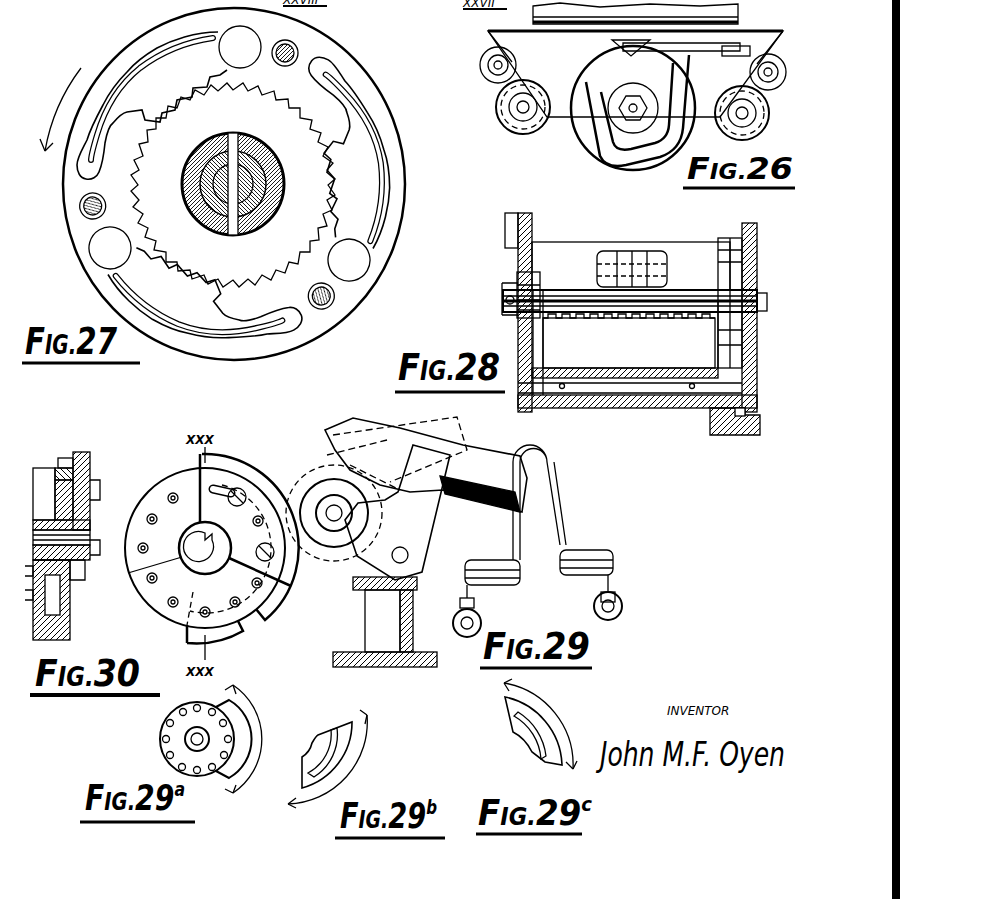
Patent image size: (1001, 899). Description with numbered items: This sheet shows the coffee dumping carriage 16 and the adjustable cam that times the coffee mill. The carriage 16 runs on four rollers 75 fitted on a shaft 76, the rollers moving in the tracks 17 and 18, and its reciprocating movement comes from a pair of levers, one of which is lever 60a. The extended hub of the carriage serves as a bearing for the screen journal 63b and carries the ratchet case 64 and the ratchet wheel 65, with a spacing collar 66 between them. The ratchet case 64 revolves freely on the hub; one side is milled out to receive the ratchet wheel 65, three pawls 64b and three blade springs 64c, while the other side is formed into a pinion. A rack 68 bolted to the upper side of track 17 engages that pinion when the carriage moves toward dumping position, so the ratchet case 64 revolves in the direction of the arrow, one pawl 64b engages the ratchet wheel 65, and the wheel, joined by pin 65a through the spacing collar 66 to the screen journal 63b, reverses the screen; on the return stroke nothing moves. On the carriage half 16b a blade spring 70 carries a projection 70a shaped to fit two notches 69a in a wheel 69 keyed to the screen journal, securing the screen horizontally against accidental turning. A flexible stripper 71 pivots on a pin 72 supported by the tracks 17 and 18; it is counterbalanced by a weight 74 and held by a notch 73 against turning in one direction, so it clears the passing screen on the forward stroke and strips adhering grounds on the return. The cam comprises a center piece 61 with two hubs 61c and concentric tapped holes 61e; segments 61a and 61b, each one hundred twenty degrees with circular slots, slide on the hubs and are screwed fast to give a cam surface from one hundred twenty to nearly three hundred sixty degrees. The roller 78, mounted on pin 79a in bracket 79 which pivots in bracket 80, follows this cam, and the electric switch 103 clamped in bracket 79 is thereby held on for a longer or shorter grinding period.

In FIG. 28, the coffee dumping carriage 16 is at (607, 253).
In FIG. 26, the carriage half 16b is at (488, 31).
In FIG. 28, the track 17 is at (518, 258).
In FIG. 28, the track 18 is at (757, 228).
In FIG. 26, the lever 60a is at (647, 123).
In FIG. 29, the center piece 61 is at (166, 505).
In FIG. 29A, the center piece 61 is at (162, 724).
In FIG. 30, the center piece 61 is at (63, 458).
In FIG. 29, the segment 61a is at (198, 461).
In FIG. 29C, the segment 61a is at (510, 712).
In FIG. 30, the segment 61a is at (82, 452).
In FIG. 29, the segment 61b is at (190, 633).
In FIG. 29B, the segment 61b is at (350, 722).
In FIG. 30, the segment 61b is at (40, 632).
In FIG. 29, the hubs 61c is at (147, 578).
In FIG. 30, the hubs 61c is at (45, 508).
In FIG. 29, the tapped holes 61e is at (168, 603).
In FIG. 29A, the tapped holes 61e is at (167, 753).
In FIG. 27, the screen journal 63b is at (278, 138).
In FIG. 27, the ratchet case 64 is at (80, 245).
In FIG. 27, the pawls 64b is at (220, 173).
In FIG. 27, the blade springs 64c is at (195, 55).
In FIG. 27, the ratchet wheel 65 is at (236, 94).
In FIG. 27, the pin 65a is at (215, 230).
In FIG. 27, the spacing collar 66 is at (272, 207).
In FIG. 28, the rack 68 is at (505, 227).
In FIG. 26, the wheel 69 is at (616, 126).
In FIG. 26, the notches 69a is at (637, 168).
In FIG. 26, the blade spring 70 is at (681, 61).
In FIG. 26, the projection 70a is at (614, 46).
In FIG. 28, the stripper 71 is at (626, 318).
In FIG. 28, the pin 72 is at (645, 405).
In FIG. 28, the notch 73 is at (746, 428).
In FIG. 28, the weight 74 is at (718, 420).
In FIG. 26, the rollers 75 is at (766, 122).
In FIG. 28, the rollers 75 is at (757, 285).
In FIG. 28, the shaft 76 is at (672, 300).
In FIG. 29, the roller 78 is at (327, 482).
In FIG. 30, the roller 78 is at (45, 470).
In FIG. 29, the bracket 79 is at (352, 555).
In FIG. 29, the pin 79a is at (397, 512).
In FIG. 29, the bracket 80 is at (380, 667).
In FIG. 29, the electric switch 103 is at (473, 527).